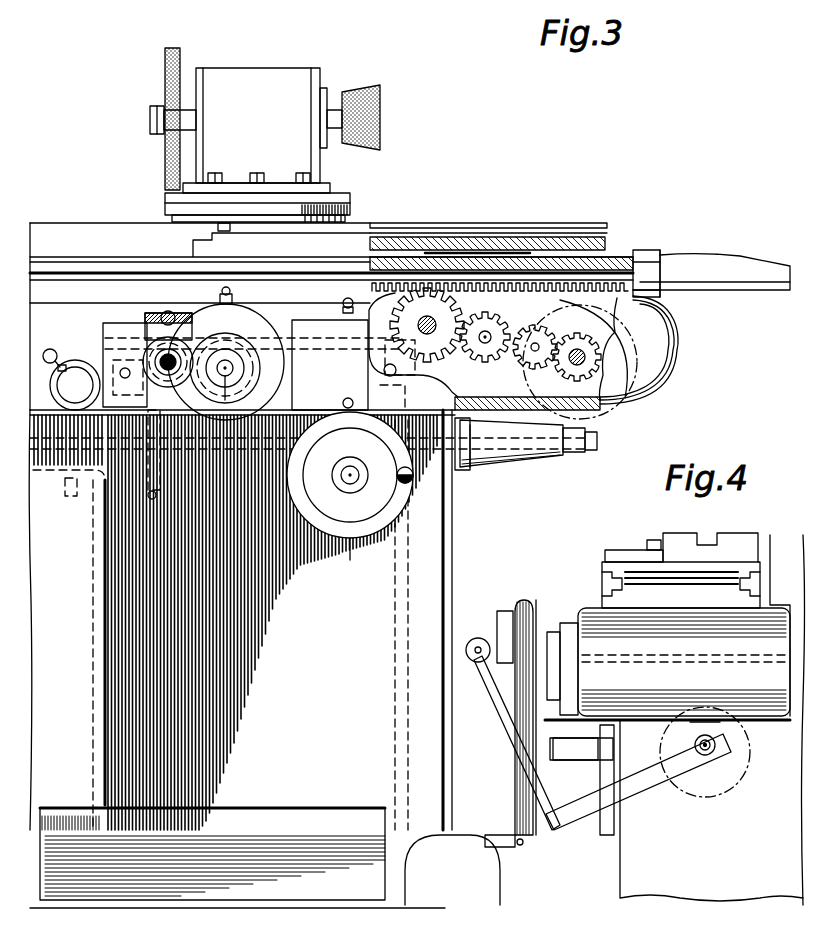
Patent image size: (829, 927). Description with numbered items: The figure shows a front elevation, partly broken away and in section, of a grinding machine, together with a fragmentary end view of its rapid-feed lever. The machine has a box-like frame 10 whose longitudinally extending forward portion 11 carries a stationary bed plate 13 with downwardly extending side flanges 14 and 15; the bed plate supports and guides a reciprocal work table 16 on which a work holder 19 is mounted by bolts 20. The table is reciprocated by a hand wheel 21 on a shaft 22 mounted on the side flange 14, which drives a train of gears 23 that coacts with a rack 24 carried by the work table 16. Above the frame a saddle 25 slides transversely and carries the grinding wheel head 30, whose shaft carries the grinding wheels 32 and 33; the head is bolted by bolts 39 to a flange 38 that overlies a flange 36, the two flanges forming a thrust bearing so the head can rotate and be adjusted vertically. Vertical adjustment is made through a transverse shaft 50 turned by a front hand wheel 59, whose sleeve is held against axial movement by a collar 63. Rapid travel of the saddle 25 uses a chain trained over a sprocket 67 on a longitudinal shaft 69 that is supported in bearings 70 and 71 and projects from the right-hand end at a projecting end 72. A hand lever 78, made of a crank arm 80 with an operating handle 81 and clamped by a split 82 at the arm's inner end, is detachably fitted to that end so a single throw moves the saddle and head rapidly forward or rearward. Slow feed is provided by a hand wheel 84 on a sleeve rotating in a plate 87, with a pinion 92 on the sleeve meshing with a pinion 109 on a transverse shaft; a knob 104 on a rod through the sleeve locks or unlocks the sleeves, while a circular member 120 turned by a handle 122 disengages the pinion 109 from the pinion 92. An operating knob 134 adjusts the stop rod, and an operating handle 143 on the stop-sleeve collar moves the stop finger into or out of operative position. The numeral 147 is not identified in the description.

In FIG. 3, the frame 10 is at (456, 564).
In FIG. 3, the forward portion of frame 11 is at (307, 659).
In FIG. 4, the forward portion of frame 11 is at (722, 888).
In FIG. 3, the bed plate 13 is at (711, 272).
In FIG. 4, the bed plate 13 is at (667, 664).
In FIG. 3, the side flange 14 is at (660, 344).
In FIG. 3, the rear side flange 15 is at (650, 297).
In FIG. 3, the work table 16 is at (625, 253).
In FIG. 4, the work table 16 is at (602, 590).
In FIG. 3, the work holder 19 is at (507, 223).
In FIG. 4, the work holder 19 is at (740, 533).
In FIG. 3, the bolts 20 is at (210, 236).
In FIG. 4, the bolts 20 is at (654, 540).
In FIG. 3, the hand wheel 21 is at (640, 382).
In FIG. 4, the hand wheel 21 is at (518, 610).
In FIG. 3, the shaft 22 is at (572, 364).
In FIG. 3, the train of gears 23 is at (456, 360).
In FIG. 3, the rack 24 is at (385, 298).
In FIG. 3, the saddle 25 is at (300, 338).
In FIG. 3, the grinding wheel head 30 is at (305, 68).
In FIG. 3, the grinding wheel 32 is at (176, 48).
In FIG. 3, the grinding wheel 33 is at (376, 85).
In FIG. 3, the flange 36 is at (350, 209).
In FIG. 3, the flange 38 is at (330, 190).
In FIG. 3, the bolts 39 is at (300, 173).
In FIG. 3, the shaft 50 is at (352, 475).
In FIG. 3, the hand wheel 59 is at (350, 540).
In FIG. 4, the hand wheel 59 is at (525, 848).
In FIG. 4, the collar 63 is at (730, 735).
In FIG. 3, the sprocket 67 is at (156, 498).
In FIG. 3, the shaft 69 is at (324, 445).
In FIG. 4, the shaft 69 is at (712, 735).
In FIG. 3, the bearing 70 is at (148, 480).
In FIG. 3, the bearing 71 is at (537, 455).
In FIG. 4, the bearing 71 is at (745, 768).
In FIG. 3, the outwardly projecting end 72 is at (585, 450).
In FIG. 4, the outwardly projecting end 72 is at (702, 758).
In FIG. 4, the hand lever 78 is at (490, 695).
In FIG. 4, the crank arm 80 is at (643, 784).
In FIG. 4, the operating handle 81 is at (512, 750).
In FIG. 4, the split 82 is at (740, 782).
In FIG. 3, the hand wheel 84 is at (282, 372).
In FIG. 3, the plate 87 is at (112, 328).
In FIG. 3, the pinion 92 is at (284, 357).
In FIG. 3, the operating knob 104 is at (231, 393).
In FIG. 3, the pinion 109 is at (140, 347).
In FIG. 3, the circular member 120 is at (172, 318).
In FIG. 3, the handle 122 is at (162, 314).
In FIG. 3, the operating knob 134 is at (78, 370).
In FIG. 3, the operating handle 143 is at (50, 349).
In FIG. 4, the bracket 147 is at (556, 750).